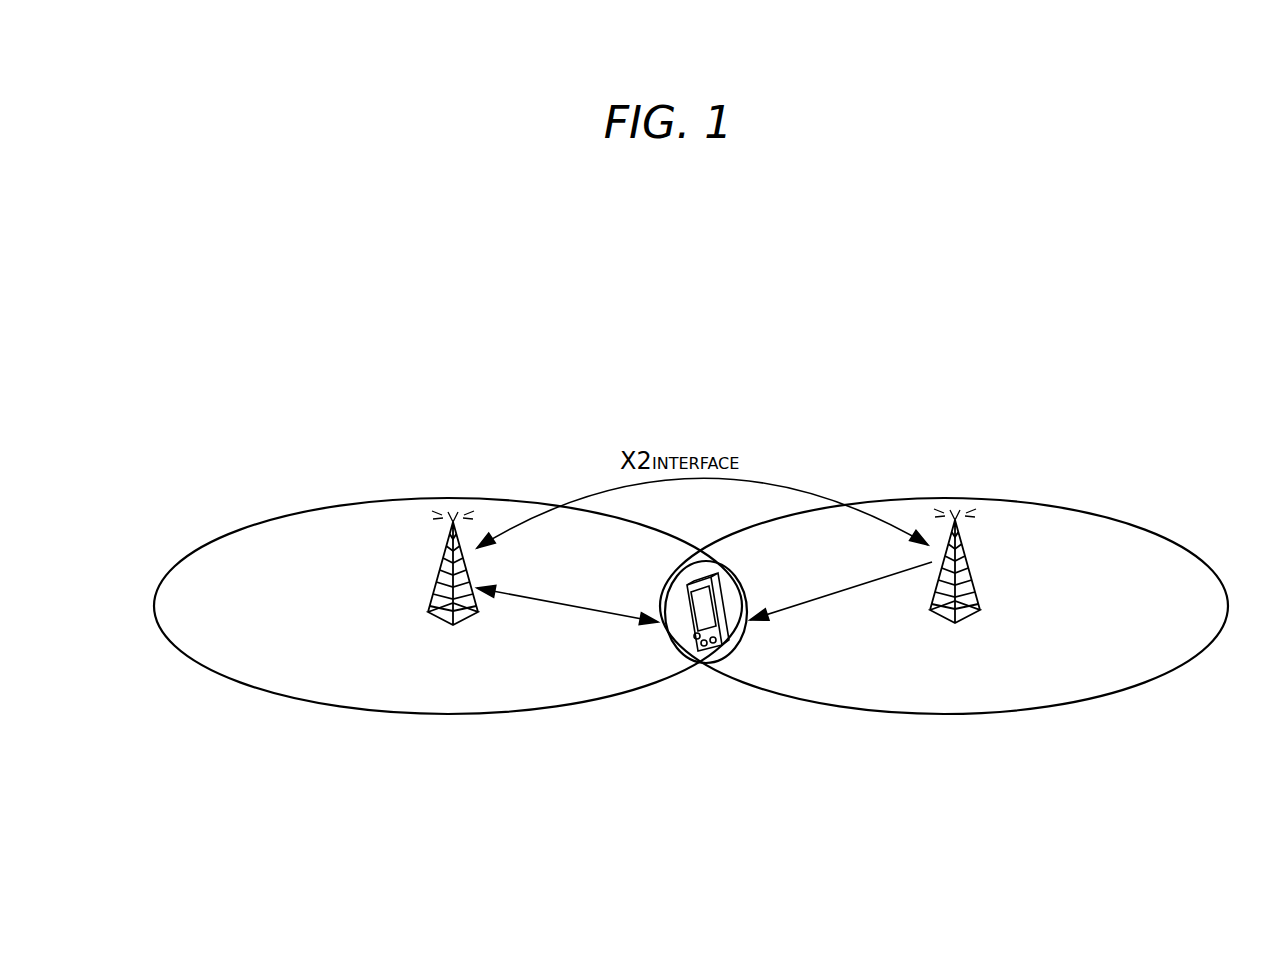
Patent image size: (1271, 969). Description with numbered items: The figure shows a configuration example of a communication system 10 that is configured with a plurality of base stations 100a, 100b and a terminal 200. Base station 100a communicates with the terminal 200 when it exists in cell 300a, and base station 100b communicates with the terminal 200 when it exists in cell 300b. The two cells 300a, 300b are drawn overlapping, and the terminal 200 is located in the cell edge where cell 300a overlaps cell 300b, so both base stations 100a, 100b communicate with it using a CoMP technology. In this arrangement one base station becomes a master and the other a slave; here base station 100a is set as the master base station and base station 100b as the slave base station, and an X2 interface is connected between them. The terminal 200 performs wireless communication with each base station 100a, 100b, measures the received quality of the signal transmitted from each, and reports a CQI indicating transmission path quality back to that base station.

The communication system 10 is at (724, 364).
The base station 100a is at (471, 520).
The base station 100b is at (973, 518).
The terminal 200 is at (718, 655).
The cell 300a is at (430, 714).
The cell 300b is at (950, 714).